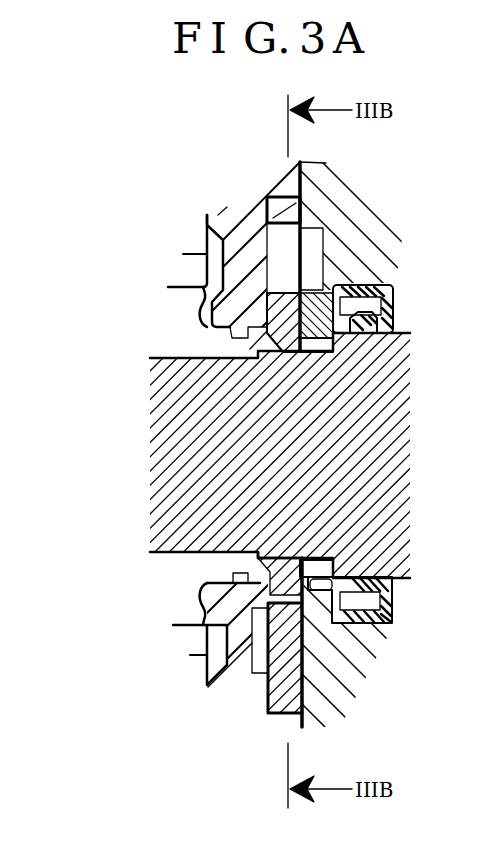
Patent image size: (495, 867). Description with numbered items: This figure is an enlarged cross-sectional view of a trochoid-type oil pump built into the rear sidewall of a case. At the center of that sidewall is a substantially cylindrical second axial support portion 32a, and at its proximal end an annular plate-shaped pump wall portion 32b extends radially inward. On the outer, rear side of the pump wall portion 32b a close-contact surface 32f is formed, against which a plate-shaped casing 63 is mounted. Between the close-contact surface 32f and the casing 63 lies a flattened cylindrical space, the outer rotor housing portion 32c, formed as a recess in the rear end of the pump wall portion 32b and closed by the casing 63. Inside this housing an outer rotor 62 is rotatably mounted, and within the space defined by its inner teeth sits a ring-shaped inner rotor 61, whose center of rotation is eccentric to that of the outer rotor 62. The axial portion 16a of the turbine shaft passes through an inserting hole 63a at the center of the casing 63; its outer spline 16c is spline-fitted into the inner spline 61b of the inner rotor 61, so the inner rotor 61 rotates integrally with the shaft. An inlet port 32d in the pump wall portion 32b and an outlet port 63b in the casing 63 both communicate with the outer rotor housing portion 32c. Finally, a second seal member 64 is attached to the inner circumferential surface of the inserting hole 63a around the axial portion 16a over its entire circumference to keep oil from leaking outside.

The axial portion 16a is at (183, 443).
The outer spline 16c is at (392, 603).
The second axial support portion 32a is at (288, 183).
The pump wall portion 32b is at (227, 253).
The outer rotor housing portion 32c is at (308, 698).
The inlet port 32d is at (253, 650).
The close-contact surface 32f is at (322, 165).
The inner rotor 61 is at (335, 333).
The inner spline 61b is at (283, 557).
The outer rotor 62 is at (283, 210).
The casing 63 is at (350, 257).
The inserting hole 63a is at (380, 290).
The outlet port 63b is at (313, 246).
The second seal member 64 is at (386, 300).